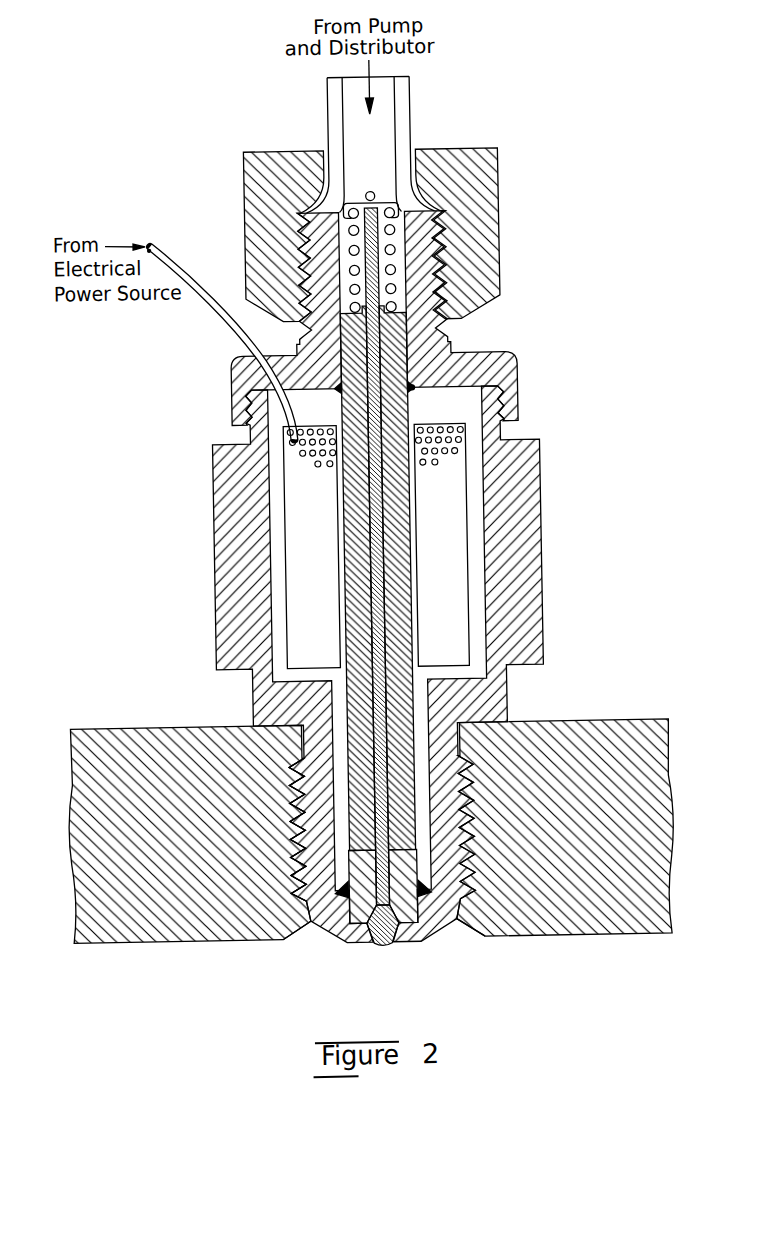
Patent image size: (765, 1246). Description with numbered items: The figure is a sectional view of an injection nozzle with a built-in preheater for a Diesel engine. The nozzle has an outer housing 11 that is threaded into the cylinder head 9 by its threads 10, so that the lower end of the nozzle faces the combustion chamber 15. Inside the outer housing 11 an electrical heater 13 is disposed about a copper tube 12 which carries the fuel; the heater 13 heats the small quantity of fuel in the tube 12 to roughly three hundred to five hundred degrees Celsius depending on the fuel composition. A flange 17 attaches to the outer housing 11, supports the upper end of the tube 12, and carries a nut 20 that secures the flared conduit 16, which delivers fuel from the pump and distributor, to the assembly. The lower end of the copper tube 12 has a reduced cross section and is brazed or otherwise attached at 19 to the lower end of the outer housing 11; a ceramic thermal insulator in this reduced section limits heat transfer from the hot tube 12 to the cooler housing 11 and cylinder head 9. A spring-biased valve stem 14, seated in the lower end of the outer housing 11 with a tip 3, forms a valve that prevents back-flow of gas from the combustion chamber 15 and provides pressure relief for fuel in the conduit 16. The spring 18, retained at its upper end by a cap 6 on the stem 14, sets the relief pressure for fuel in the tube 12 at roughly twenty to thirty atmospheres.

The electrode tip insert 3 is at (416, 940).
The spring 6 is at (386, 195).
The cylinder head 9 is at (171, 724).
The threads 10 is at (304, 931).
The outer housing 11 is at (538, 548).
The copper tube 12 is at (450, 557).
The electrical heater 13 is at (316, 555).
The valve stem 14 is at (379, 950).
The combustion chamber 15 is at (256, 1016).
The flared conduit 16 is at (413, 106).
The flange 17 is at (518, 352).
The spring 18 is at (348, 203).
The brazed attachment 19 is at (498, 407).
The nut 20 is at (500, 178).